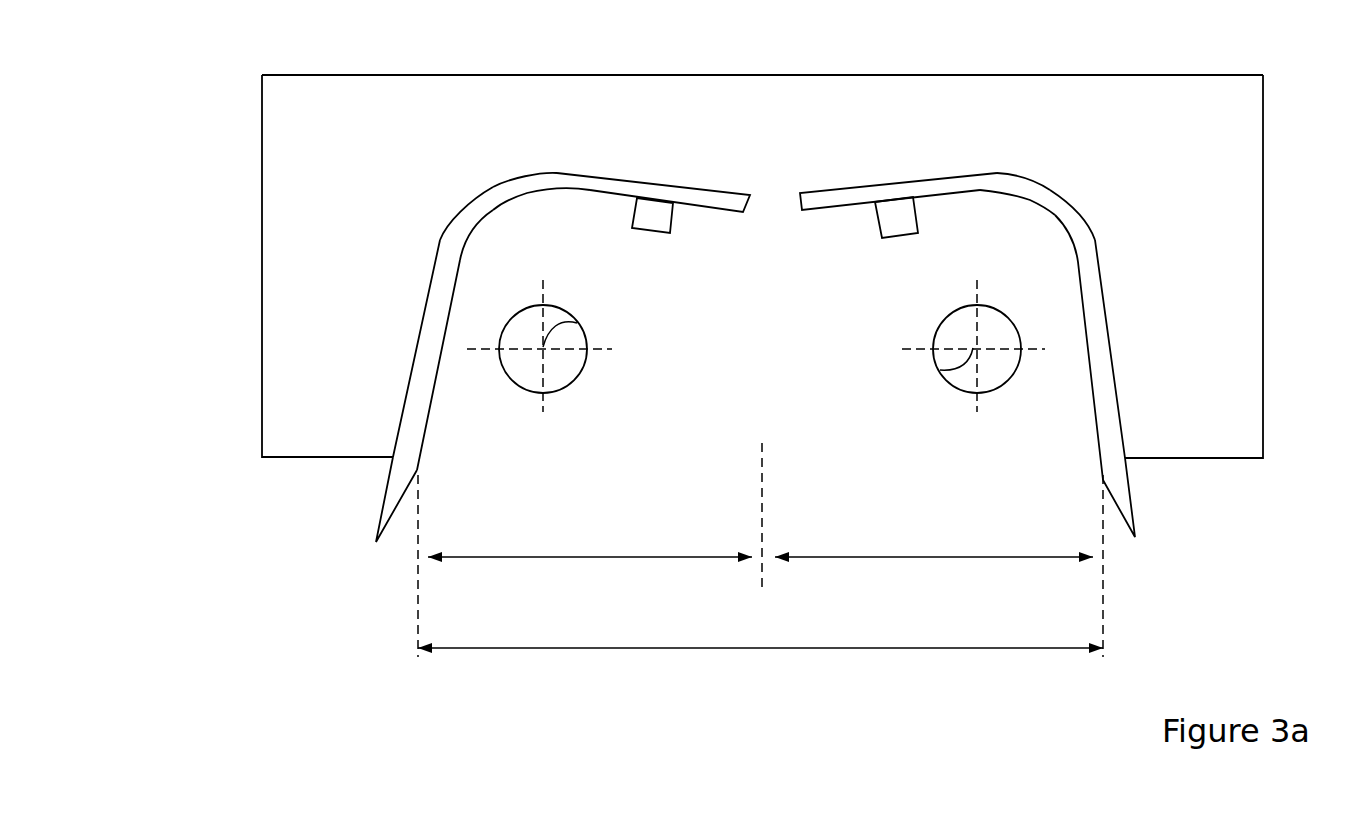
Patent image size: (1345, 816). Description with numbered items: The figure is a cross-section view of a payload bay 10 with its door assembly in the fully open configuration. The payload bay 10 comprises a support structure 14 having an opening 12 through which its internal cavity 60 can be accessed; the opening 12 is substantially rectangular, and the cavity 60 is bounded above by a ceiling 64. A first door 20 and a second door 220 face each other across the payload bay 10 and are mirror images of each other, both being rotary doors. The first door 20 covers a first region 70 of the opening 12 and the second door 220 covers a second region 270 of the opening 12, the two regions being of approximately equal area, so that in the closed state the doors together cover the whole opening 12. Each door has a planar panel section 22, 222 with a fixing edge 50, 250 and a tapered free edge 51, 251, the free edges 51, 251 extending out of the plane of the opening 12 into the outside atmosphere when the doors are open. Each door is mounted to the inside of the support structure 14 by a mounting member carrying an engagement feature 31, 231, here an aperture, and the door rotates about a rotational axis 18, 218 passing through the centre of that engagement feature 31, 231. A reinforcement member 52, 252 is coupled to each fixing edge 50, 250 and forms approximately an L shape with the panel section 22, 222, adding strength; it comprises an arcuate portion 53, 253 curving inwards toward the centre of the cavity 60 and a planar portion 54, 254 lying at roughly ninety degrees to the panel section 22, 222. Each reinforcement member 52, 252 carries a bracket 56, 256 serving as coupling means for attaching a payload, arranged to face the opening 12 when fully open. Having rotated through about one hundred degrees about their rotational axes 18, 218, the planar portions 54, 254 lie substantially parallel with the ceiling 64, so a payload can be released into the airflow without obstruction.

The payload bay 10 is at (195, 115).
The opening 12 is at (760, 663).
The support structure 14 is at (317, 457).
The rotational axis 18 is at (940, 370).
The first door 20 is at (1185, 532).
The panel section 22 is at (1100, 362).
The engagement feature 31 is at (940, 323).
The fixing edge 50 is at (1093, 227).
The free edge 51 is at (1135, 537).
The reinforcement member 52 is at (927, 118).
The arcuate portion 53 is at (1038, 193).
The planar portion 54 is at (922, 188).
The bracket 56 is at (890, 215).
The internal cavity 60 is at (753, 332).
The ceiling 64 is at (823, 75).
The first region 70 is at (934, 571).
The rotational axis 218 is at (577, 323).
The second door 220 is at (343, 517).
The panel section 222 is at (433, 360).
The engagement feature 231 is at (580, 370).
The fixing edge 250 is at (440, 242).
The free edge 251 is at (377, 538).
The reinforcement member 252 is at (473, 124).
The arcuate portion 253 is at (500, 207).
The planar portion 254 is at (597, 187).
The bracket 256 is at (663, 218).
The second region 270 is at (590, 571).